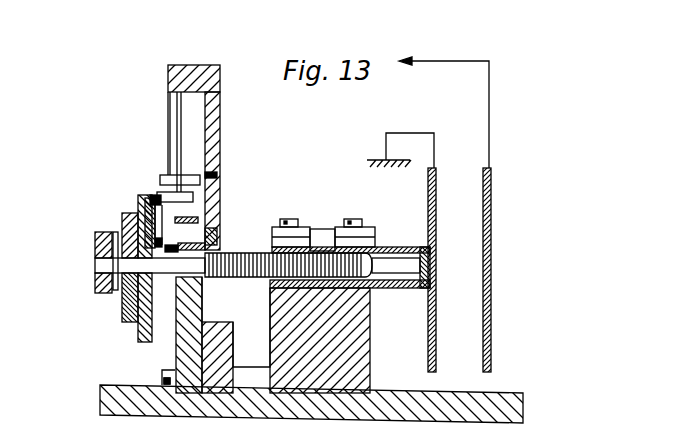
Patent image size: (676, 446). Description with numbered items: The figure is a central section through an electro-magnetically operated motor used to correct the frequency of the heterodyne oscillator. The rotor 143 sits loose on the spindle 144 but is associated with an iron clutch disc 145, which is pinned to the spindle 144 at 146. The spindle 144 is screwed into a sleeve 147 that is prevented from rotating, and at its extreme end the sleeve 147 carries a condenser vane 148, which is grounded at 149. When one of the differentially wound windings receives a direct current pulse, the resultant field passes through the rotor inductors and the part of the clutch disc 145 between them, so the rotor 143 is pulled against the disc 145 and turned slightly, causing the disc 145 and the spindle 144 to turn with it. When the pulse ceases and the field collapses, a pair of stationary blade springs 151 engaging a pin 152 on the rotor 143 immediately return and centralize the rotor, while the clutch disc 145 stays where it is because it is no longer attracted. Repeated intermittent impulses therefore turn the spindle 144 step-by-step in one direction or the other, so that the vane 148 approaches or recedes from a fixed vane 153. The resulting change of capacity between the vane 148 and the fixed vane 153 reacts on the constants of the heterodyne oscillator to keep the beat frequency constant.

The rotor 143 is at (150, 196).
The spindle 144 is at (100, 261).
The iron clutch disc 145 is at (128, 298).
The pin 146 is at (115, 233).
The sleeve 147 is at (282, 243).
The condenser vane 148 is at (437, 200).
The ground connection 149 is at (368, 166).
The stationary blade springs 151 is at (170, 102).
The pin 152 is at (195, 197).
The fixed vane 153 is at (492, 198).